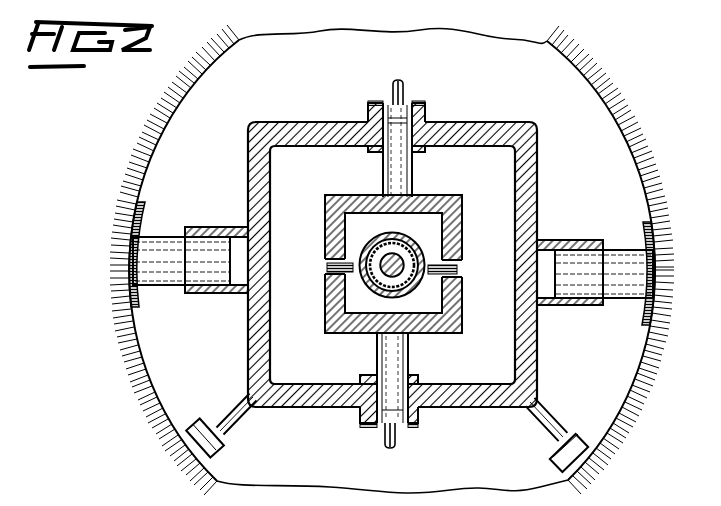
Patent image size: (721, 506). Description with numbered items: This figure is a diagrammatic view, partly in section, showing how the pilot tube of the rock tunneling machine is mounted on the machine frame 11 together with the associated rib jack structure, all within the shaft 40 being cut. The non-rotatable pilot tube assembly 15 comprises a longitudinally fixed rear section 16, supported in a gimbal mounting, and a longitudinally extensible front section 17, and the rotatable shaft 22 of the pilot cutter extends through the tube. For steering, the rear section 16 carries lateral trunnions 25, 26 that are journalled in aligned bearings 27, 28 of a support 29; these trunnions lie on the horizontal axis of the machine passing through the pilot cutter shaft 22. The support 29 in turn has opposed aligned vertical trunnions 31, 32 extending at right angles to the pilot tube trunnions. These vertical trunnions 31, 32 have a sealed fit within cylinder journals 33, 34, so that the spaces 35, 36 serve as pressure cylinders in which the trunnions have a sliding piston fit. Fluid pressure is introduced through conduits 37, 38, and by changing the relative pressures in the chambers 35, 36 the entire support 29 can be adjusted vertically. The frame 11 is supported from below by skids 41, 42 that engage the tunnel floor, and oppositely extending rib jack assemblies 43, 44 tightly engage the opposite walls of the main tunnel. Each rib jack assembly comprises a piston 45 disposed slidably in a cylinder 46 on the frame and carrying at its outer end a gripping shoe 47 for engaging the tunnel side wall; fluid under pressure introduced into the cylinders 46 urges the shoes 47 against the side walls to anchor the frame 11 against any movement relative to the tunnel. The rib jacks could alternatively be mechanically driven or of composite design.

The frame 11 is at (548, 126).
The pilot tube assembly 15 is at (430, 249).
The rear section 16 is at (363, 282).
The front section 17 is at (370, 291).
The rotatable shaft 22 is at (382, 250).
The lateral trunnion 25 is at (327, 268).
The lateral trunnion 26 is at (458, 268).
The bearing 27 is at (327, 243).
The bearing 28 is at (455, 287).
The support 29 is at (458, 321).
The vertical trunnion 31 is at (379, 352).
The vertical trunnion 32 is at (412, 172).
The cylinder journal 33 is at (400, 426).
The cylinder journal 34 is at (414, 104).
The pressure chamber 35 is at (382, 418).
The pressure chamber 36 is at (389, 101).
The conduit 37 is at (388, 449).
The conduit 38 is at (403, 84).
The shaft 40 is at (610, 117).
The skid 41 is at (240, 425).
The skid 42 is at (559, 432).
The rib jack assembly 43 is at (220, 224).
The rib jack assembly 44 is at (594, 232).
The piston 45 is at (149, 285).
The cylinder 46 is at (212, 293).
The gripping shoe 47 is at (137, 300).